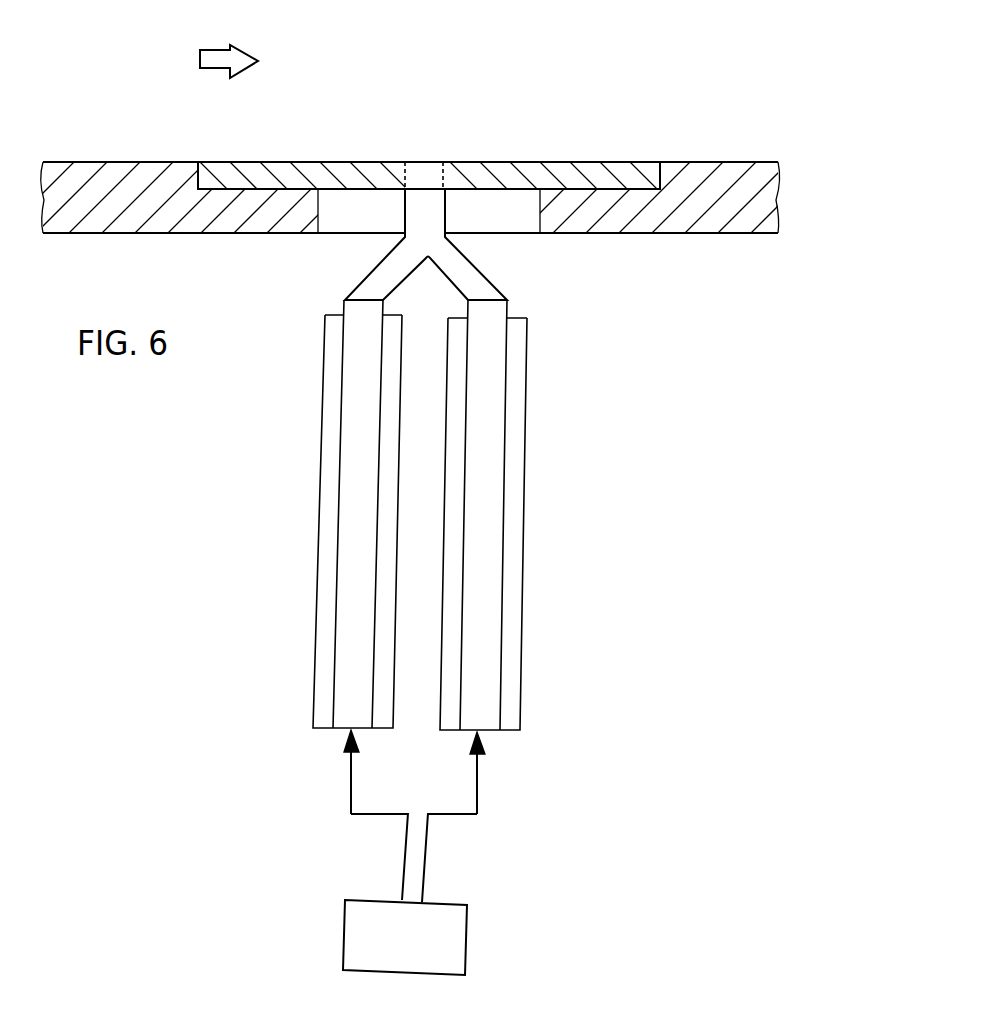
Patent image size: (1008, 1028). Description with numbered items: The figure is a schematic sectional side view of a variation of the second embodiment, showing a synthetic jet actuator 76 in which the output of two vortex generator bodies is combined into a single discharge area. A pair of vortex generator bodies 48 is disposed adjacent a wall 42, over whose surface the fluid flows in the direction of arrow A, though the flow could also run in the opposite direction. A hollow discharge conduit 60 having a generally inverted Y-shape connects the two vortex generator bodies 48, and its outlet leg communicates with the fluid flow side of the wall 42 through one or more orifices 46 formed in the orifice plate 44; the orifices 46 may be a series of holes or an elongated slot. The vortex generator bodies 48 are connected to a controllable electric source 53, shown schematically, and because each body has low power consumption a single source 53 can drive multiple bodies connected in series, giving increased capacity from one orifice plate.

The arrow A is at (218, 50).
The synthetic jet actuator 76 is at (583, 67).
The wall 42 is at (767, 210).
The orifice plate 44 is at (560, 173).
The orifices 46 is at (441, 178).
The discharge conduit 60 is at (463, 275).
The vortex generator bodies 48 is at (308, 428).
The controllable electric source 53 is at (420, 952).